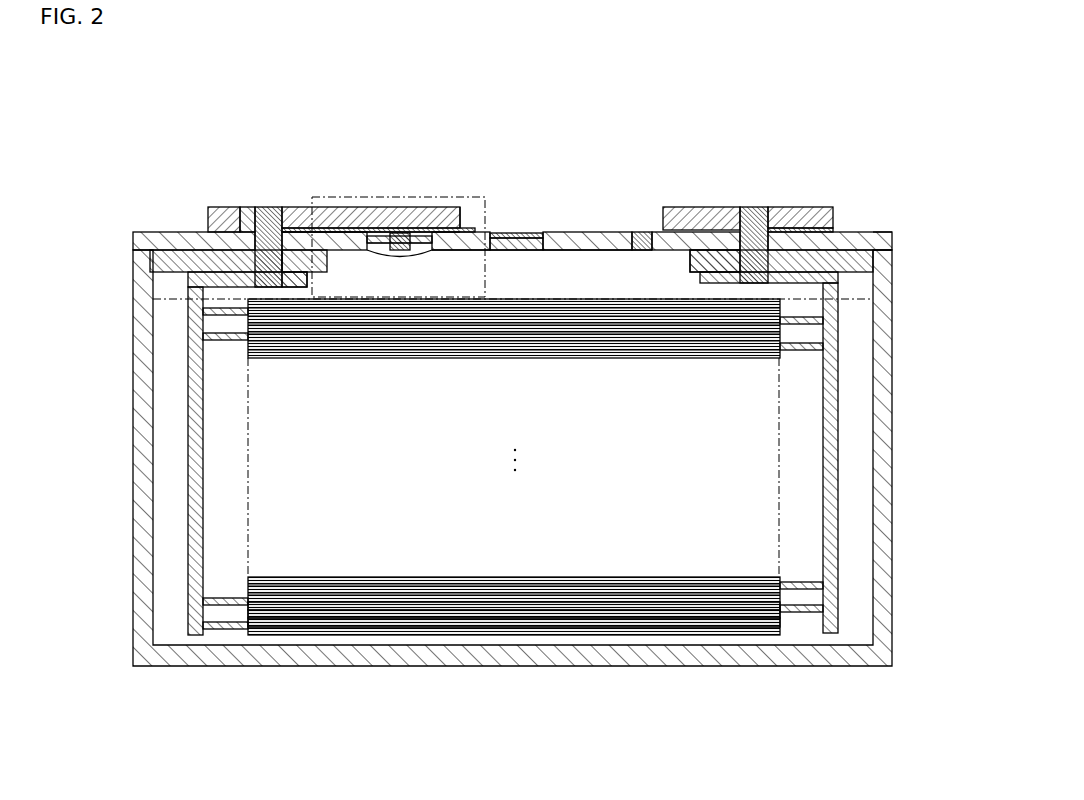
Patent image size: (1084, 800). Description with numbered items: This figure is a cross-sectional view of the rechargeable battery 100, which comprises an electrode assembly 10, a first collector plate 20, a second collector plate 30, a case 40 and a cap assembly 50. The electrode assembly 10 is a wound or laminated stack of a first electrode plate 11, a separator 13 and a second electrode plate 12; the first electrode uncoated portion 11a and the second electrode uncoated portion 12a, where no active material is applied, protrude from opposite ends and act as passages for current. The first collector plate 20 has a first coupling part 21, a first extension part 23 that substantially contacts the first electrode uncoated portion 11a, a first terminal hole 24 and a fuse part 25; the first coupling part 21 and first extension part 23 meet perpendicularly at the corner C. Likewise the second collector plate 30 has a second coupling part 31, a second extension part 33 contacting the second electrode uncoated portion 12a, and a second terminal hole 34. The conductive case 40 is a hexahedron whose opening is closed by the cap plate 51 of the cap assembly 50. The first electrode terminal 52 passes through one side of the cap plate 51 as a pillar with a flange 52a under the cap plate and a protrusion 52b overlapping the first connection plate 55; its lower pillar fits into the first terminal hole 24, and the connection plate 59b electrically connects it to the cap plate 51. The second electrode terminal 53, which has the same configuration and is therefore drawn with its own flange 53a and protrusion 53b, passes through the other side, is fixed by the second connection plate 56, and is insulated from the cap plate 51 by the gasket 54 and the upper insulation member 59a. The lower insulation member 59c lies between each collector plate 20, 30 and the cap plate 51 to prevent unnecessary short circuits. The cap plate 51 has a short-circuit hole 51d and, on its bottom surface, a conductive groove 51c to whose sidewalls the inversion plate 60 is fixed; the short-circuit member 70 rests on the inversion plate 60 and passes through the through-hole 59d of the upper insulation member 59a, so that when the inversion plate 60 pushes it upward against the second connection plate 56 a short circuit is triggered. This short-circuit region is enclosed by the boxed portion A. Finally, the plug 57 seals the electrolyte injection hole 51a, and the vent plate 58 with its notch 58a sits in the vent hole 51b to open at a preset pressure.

The rechargeable battery 100 is at (850, 95).
The electrode assembly 10 is at (512, 507).
The first electrode plate 11 is at (694, 637).
The first electrode uncoated portion 11a is at (800, 613).
The second electrode plate 12 is at (372, 636).
The second electrode uncoated portion 12a is at (226, 630).
The separator 13 is at (475, 637).
The first collector plate 20 is at (830, 403).
The first coupling part 21 is at (812, 272).
The first extension part 23 is at (840, 478).
The first terminal hole 24 is at (880, 298).
The fuse part 25 is at (870, 240).
The second collector plate 30 is at (186, 402).
The second coupling part 31 is at (205, 275).
The second extension part 33 is at (195, 478).
The second terminal hole 34 is at (240, 300).
The case 40 is at (882, 348).
The cap assembly 50 is at (509, 184).
The cap plate 51 is at (590, 240).
The electrolyte injection hole 51a is at (633, 252).
The vent hole 51b is at (530, 250).
The conductive groove 51c is at (420, 257).
The short-circuit hole 51d is at (380, 232).
The first electrode terminal 52 is at (752, 207).
The flange 52a is at (697, 273).
The protrusion 52b is at (796, 207).
The second electrode terminal 53 is at (272, 212).
The second terminal flange 53a is at (328, 268).
The second terminal plate 53b is at (260, 207).
The gasket 54 is at (224, 207).
The first connection plate 55 is at (690, 207).
The second connection plate 56 is at (335, 207).
The plug 57 is at (642, 240).
The vent plate 58 is at (530, 240).
The notch 58a is at (505, 233).
The upper insulation member 59a is at (465, 228).
The connection plate 59b is at (792, 230).
The lower insulation member 59c is at (152, 262).
The through-hole 59d is at (420, 228).
The inversion plate 60 is at (400, 252).
The short-circuit member 70 is at (440, 232).
The region A is at (322, 197).
The corner C is at (890, 238).